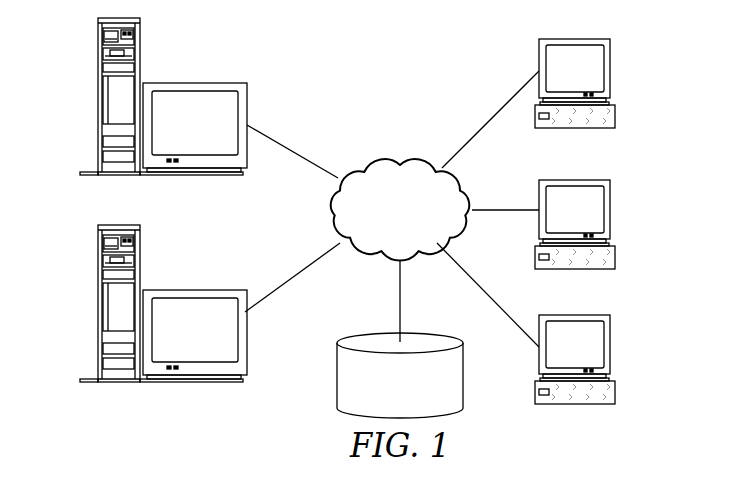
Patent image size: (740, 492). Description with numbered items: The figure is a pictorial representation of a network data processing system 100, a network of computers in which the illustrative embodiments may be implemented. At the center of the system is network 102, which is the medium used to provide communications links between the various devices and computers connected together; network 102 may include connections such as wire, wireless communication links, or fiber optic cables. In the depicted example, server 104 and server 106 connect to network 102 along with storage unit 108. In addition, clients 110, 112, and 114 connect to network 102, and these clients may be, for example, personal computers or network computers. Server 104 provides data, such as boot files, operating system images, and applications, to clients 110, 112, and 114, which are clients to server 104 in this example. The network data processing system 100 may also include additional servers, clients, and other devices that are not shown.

The network data processing system 100 is at (451, 56).
The network 102 is at (372, 160).
The server 104 is at (98, 100).
The server 106 is at (98, 304).
The storage unit 108 is at (337, 383).
The client 110 is at (611, 68).
The client 112 is at (611, 209).
The client 114 is at (611, 347).